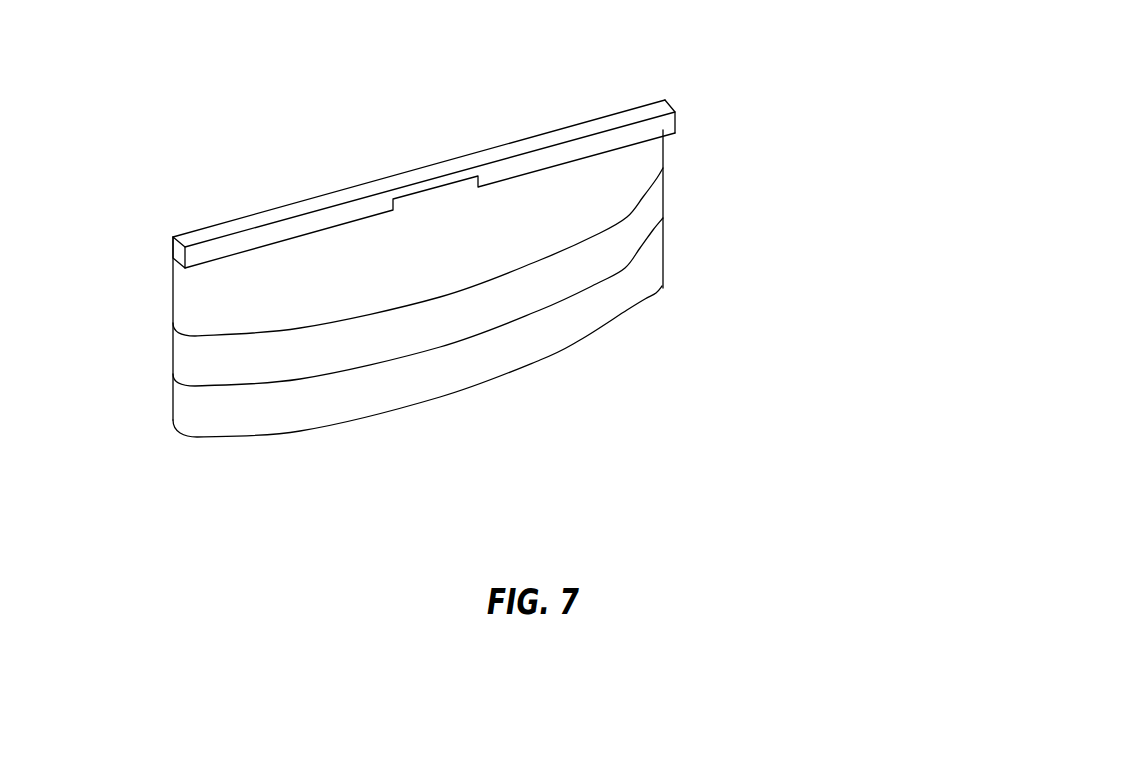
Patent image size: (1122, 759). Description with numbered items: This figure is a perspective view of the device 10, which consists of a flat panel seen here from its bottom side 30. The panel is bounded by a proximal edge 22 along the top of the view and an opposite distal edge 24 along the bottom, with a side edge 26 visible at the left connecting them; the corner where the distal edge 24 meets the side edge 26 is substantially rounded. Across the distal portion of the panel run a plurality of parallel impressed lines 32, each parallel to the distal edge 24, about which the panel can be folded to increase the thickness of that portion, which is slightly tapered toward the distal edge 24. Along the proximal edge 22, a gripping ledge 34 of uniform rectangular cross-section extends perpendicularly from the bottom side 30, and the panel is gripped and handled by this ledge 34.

The device 10 is at (841, 84).
The proximal edge 22 is at (430, 163).
The distal edge 24 is at (573, 346).
The side edge 26 is at (172, 313).
The bottom side 30 is at (620, 185).
The impressed line 32 is at (600, 231).
The gripping ledge 34 is at (673, 120).